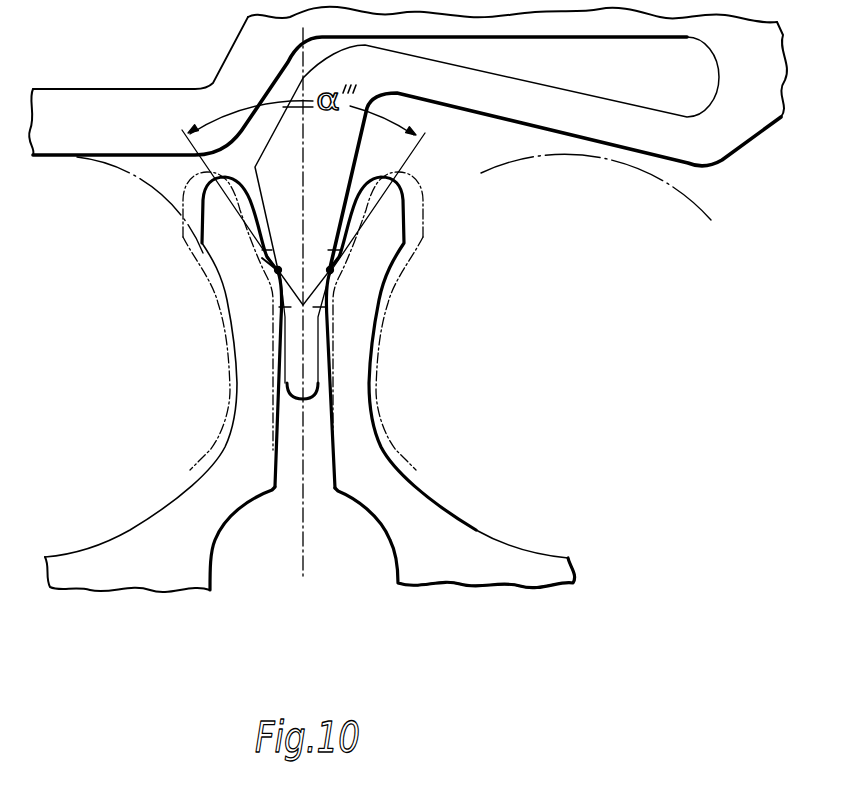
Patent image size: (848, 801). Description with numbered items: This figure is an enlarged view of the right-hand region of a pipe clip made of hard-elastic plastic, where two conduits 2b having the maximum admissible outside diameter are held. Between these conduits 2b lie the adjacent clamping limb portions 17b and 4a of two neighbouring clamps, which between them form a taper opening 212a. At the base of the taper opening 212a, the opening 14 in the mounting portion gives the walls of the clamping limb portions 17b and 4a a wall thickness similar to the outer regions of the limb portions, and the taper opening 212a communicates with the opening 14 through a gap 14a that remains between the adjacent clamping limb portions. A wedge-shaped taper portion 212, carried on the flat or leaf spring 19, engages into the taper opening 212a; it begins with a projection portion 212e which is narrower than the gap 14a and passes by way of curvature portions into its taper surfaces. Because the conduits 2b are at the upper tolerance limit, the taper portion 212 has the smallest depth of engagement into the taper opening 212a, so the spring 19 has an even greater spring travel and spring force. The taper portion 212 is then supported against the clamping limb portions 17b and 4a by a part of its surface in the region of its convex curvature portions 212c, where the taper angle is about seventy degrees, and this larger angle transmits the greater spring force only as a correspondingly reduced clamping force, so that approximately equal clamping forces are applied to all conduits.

The flat or leaf spring 19 is at (628, 124).
The conduit 2b is at (101, 165).
The taper portion 212 is at (315, 238).
The taper opening 212a is at (268, 255).
The convex curvature portion 212c is at (273, 270).
The clamping limb portion 4a is at (353, 347).
The projection portion 212e is at (315, 384).
The clamping limb portion 17b is at (260, 387).
The opening 14 is at (347, 533).
The gap 14a is at (278, 470).